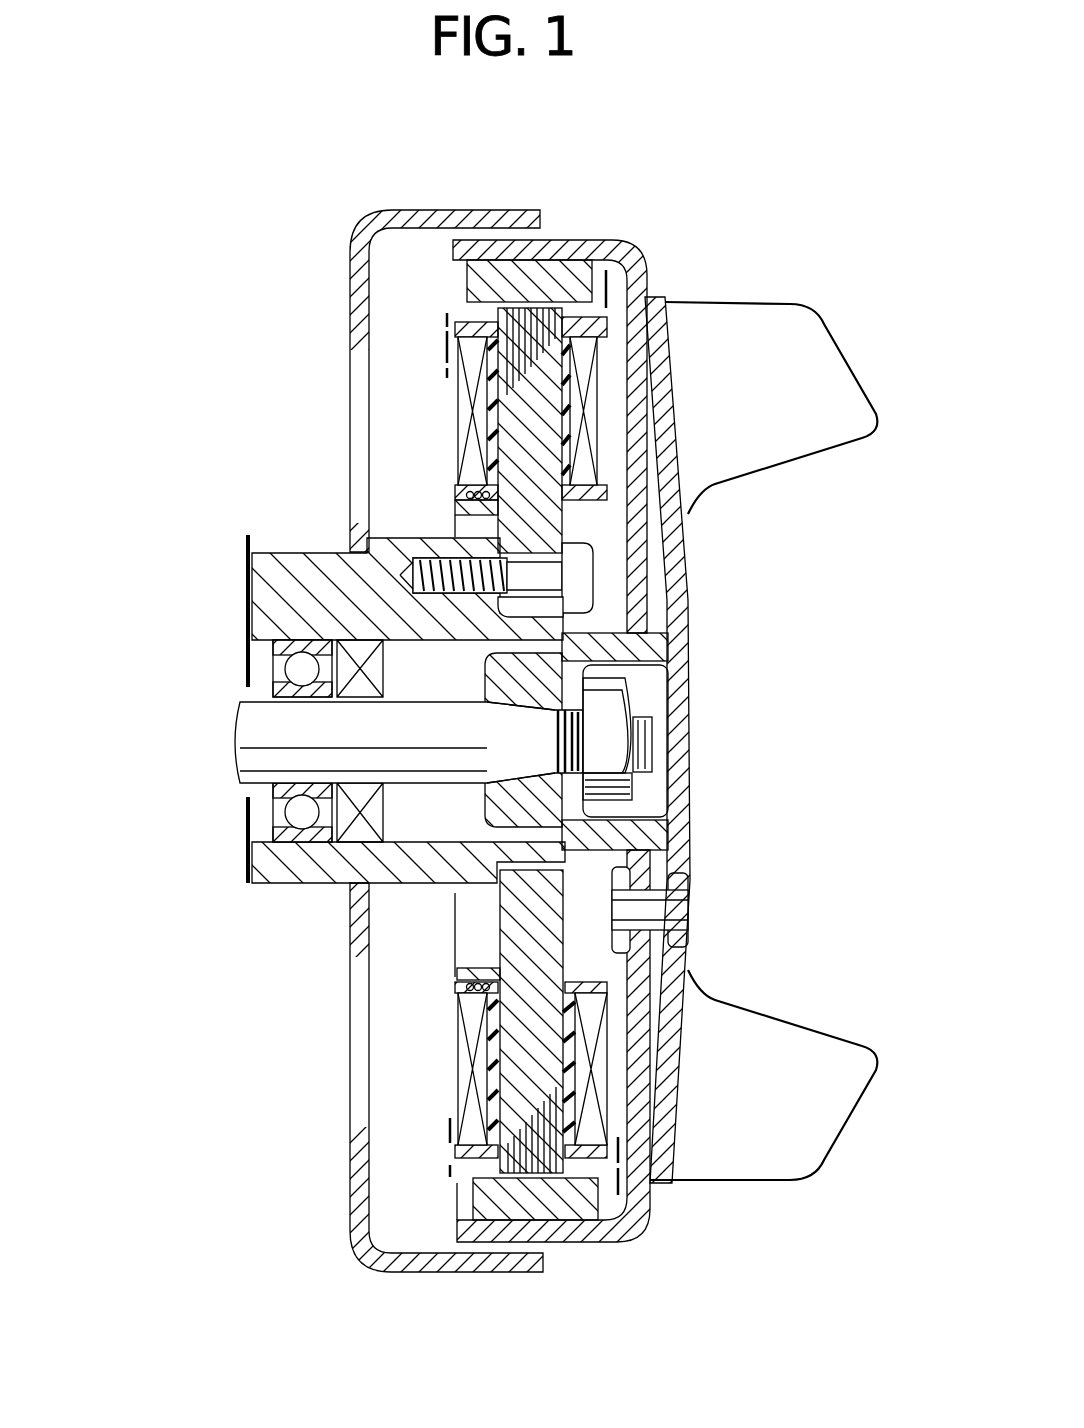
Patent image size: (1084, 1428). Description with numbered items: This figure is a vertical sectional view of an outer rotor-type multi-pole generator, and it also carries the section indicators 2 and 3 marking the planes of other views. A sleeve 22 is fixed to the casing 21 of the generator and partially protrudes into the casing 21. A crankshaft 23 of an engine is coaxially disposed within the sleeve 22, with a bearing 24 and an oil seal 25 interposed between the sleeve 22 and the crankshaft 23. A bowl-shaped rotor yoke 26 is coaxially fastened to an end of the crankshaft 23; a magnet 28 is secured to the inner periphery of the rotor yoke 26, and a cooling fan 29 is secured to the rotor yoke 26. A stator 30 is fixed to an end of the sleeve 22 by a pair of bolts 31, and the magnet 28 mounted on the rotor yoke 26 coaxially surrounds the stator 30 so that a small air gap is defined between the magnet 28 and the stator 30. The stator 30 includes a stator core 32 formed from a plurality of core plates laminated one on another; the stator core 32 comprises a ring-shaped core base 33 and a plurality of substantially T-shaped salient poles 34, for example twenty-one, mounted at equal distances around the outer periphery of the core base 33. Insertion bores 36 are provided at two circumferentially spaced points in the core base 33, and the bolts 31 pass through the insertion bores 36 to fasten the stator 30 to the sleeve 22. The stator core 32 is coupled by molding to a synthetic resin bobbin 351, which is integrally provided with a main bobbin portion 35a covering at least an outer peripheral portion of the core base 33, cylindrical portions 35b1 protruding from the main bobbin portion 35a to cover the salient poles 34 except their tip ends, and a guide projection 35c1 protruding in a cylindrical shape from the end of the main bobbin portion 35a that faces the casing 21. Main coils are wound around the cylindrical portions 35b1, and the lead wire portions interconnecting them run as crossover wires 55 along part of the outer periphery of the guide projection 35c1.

The casing 21 is at (356, 308).
The sleeve 22 is at (292, 565).
The crankshaft 23 is at (292, 730).
The bearing 24 is at (288, 667).
The oil seal 25 is at (362, 815).
The rotor yoke 26 is at (585, 1232).
The magnet 28 is at (580, 262).
The cooling fan 29 is at (768, 322).
The stator 30 is at (440, 472).
The bolts 31 is at (577, 563).
The stator core 32 is at (575, 453).
The core base 33 is at (513, 597).
The salient poles 34 is at (528, 308).
The bobbin 351 is at (457, 318).
The main bobbin portion 35a is at (500, 975).
The cylindrical portions 35b1 is at (495, 378).
The guide projection 35c1 is at (457, 972).
The insertion bores 36 is at (537, 582).
The crossover wires 55 is at (463, 493).
The section line 2 is at (608, 290).
The section line 3 is at (445, 333).